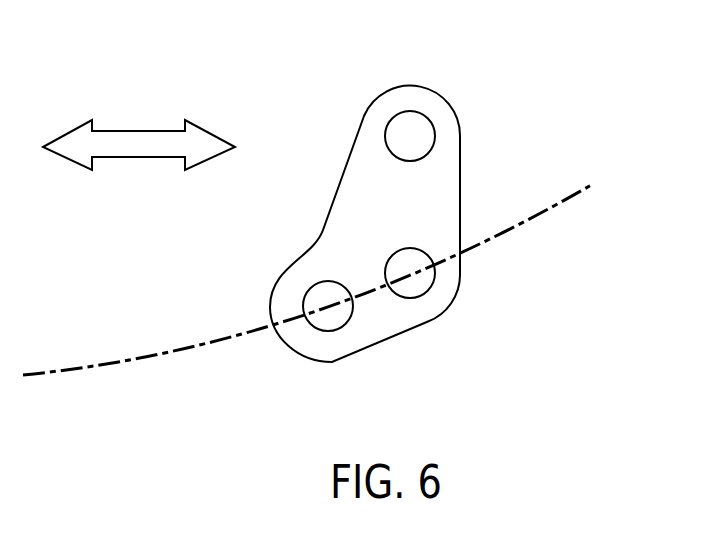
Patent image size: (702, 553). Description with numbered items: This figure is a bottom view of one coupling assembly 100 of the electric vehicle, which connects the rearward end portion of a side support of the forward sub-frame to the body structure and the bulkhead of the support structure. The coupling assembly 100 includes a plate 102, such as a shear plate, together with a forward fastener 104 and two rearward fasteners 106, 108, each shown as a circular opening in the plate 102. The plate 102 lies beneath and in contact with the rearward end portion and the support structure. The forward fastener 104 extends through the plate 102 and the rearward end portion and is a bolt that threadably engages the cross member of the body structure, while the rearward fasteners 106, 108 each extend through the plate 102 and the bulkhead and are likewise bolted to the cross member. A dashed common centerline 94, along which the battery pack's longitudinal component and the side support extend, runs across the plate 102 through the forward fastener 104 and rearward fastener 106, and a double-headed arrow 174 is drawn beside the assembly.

The common centerline 94 is at (553, 205).
The coupling assembly 100 is at (417, 239).
The plate 102 is at (460, 167).
The forward fastener 104 is at (330, 332).
The rearward fastener 106 is at (433, 287).
The rearward fastener 108 is at (425, 113).
The direction of movement arrow 174 is at (137, 131).